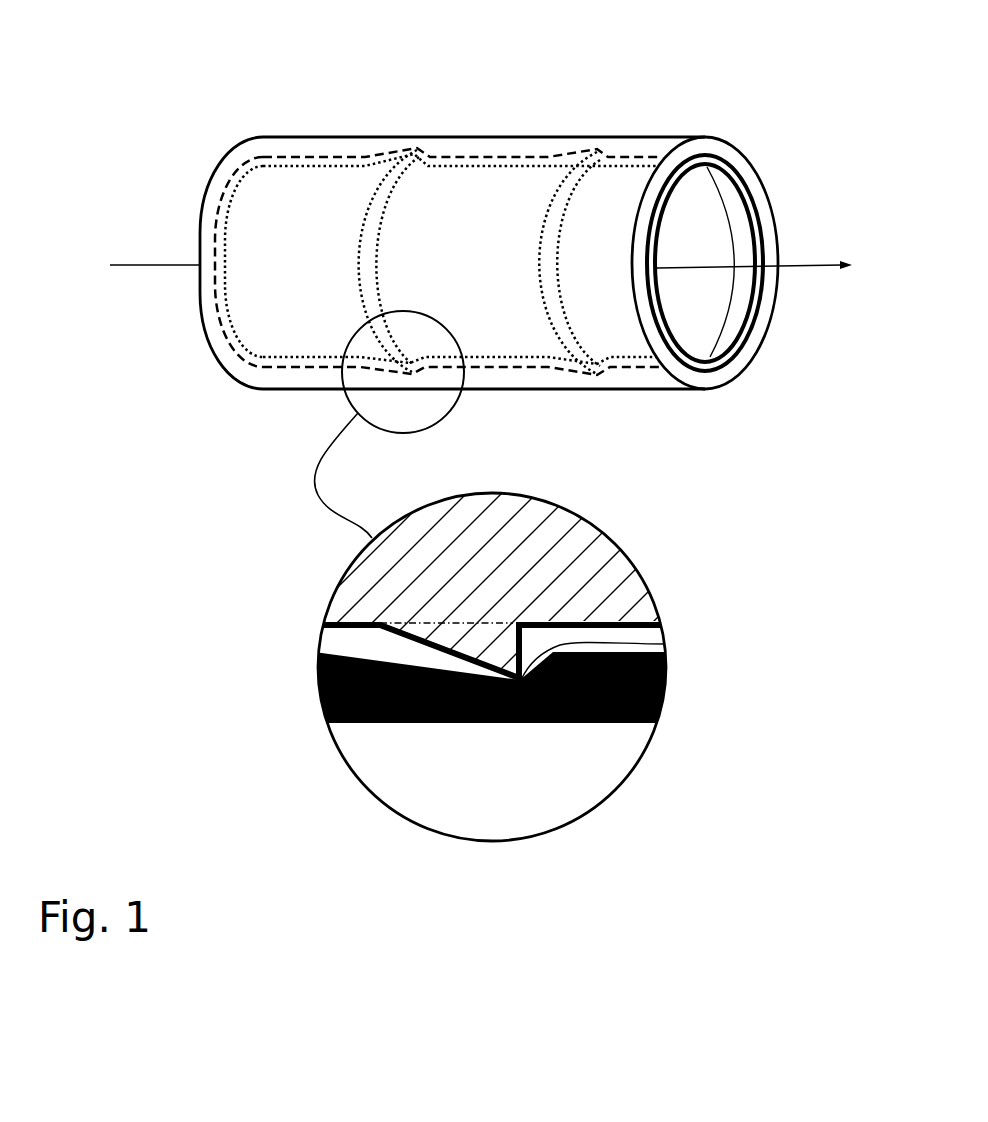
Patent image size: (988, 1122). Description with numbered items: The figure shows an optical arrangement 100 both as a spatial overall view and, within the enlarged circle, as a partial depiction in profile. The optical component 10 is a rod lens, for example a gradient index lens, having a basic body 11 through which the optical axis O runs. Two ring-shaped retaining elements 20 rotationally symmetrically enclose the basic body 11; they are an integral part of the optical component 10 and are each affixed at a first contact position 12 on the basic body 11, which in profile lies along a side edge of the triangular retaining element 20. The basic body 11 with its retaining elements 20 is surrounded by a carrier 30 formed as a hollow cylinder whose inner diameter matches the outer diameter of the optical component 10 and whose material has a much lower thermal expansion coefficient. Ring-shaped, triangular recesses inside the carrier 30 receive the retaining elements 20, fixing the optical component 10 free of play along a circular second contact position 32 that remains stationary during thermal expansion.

The optical arrangement 100 is at (428, 106).
The optical component 10 is at (710, 227).
The basic body 11 is at (540, 567).
The first contact position 12 is at (603, 167).
The retaining element 20 is at (477, 637).
The carrier 30 is at (705, 148).
The second contact position 32 is at (597, 150).
The optical axis O is at (822, 272).